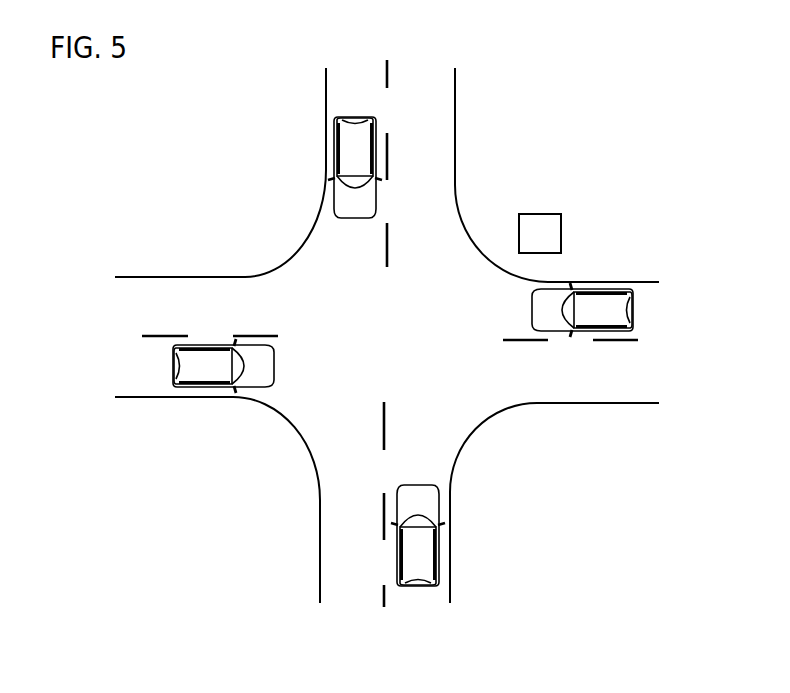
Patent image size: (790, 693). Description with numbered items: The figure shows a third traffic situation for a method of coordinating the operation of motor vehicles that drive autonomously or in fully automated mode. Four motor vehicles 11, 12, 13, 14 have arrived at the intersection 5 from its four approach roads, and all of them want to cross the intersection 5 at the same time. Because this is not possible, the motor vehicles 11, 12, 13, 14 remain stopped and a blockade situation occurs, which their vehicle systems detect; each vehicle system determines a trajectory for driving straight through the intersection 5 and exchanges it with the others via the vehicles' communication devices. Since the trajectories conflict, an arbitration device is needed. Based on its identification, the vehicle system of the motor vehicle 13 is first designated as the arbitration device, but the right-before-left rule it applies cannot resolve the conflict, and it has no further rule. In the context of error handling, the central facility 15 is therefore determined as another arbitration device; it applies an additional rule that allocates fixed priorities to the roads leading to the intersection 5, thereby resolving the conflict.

The intersection 5 is at (322, 275).
The motor vehicle 11 is at (417, 549).
The motor vehicle 12 is at (597, 305).
The motor vehicle 13 is at (355, 157).
The motor vehicle 14 is at (207, 369).
The central facility 15 is at (540, 212).